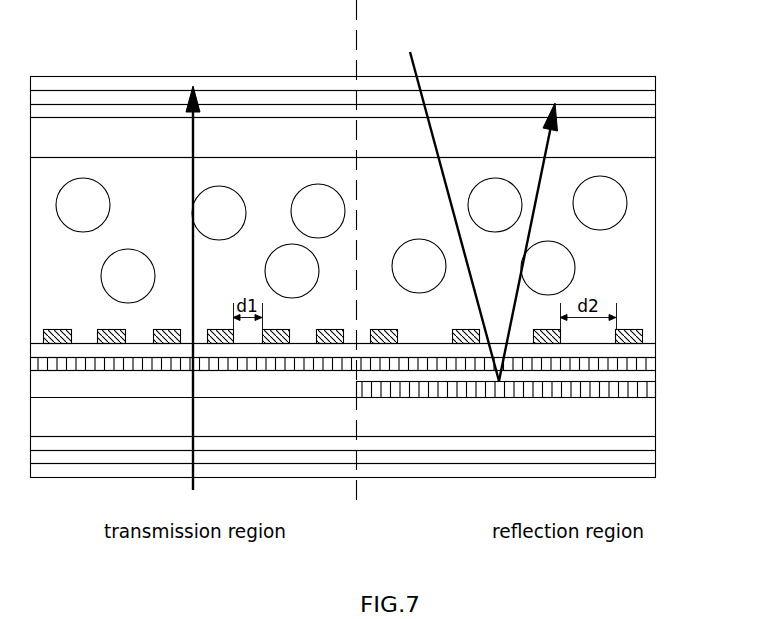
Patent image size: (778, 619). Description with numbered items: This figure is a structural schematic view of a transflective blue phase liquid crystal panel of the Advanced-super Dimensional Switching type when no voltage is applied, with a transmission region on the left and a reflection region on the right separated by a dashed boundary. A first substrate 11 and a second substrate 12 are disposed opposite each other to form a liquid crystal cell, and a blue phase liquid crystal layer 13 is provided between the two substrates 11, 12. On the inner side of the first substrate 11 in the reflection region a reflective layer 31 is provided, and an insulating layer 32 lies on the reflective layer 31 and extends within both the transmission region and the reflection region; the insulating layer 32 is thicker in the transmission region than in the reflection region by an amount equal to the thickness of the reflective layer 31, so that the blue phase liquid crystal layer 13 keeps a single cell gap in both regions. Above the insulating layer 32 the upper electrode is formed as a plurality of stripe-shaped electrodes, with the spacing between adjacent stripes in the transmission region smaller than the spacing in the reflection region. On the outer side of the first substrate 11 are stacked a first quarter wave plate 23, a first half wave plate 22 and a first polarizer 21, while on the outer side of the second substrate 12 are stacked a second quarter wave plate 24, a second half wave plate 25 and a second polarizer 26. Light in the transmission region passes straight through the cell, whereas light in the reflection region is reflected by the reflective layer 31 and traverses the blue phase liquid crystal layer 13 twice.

The first substrate 11 is at (295, 423).
The second substrate 12 is at (275, 130).
The blue phase liquid crystal layer 13 is at (628, 243).
The first polarizer 21 is at (640, 472).
The first half wave plate 22 is at (640, 457).
The first quarter wave plate 23 is at (635, 442).
The second quarter wave plate 24 is at (640, 110).
The second half wave plate 25 is at (640, 97).
The second polarizer 26 is at (635, 83).
The reflective layer 31 is at (640, 391).
The insulating layer 32 is at (635, 378).